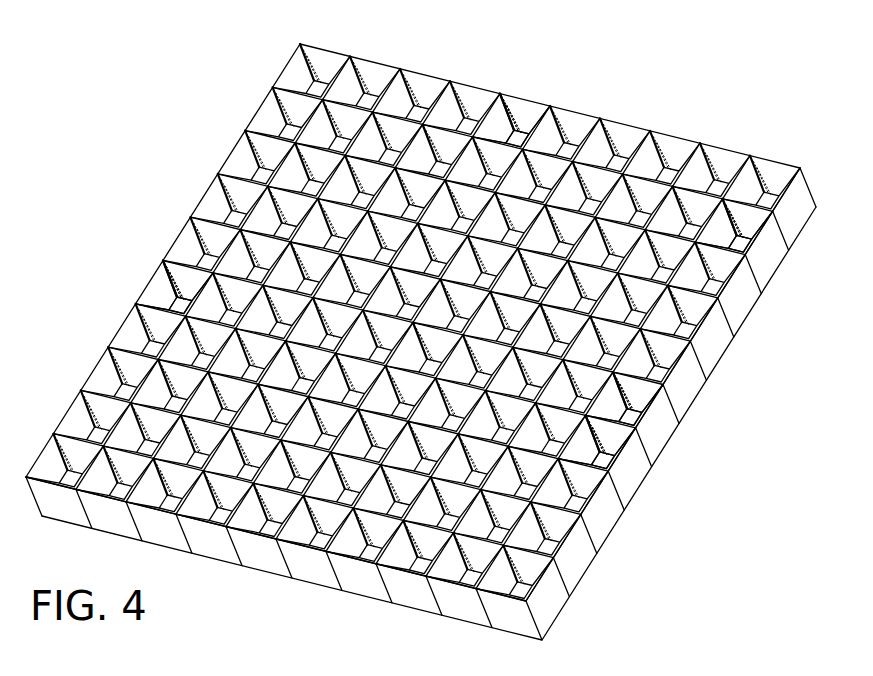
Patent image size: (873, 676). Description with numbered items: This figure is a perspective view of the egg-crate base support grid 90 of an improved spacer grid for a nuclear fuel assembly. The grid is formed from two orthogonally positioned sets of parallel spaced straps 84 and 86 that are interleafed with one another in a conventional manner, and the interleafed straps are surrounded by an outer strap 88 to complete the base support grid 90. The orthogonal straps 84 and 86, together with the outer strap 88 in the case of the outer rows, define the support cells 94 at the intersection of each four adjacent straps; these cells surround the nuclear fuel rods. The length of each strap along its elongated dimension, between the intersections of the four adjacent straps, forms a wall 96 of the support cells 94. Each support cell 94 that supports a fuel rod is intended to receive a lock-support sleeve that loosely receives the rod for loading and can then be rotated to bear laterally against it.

The parallel spaced straps 84 is at (348, 82).
The parallel spaced straps 86 is at (183, 273).
The outer strap 88 is at (602, 517).
The base support grid 90 is at (430, 323).
The support cells 94 is at (635, 402).
The wall 96 is at (587, 448).